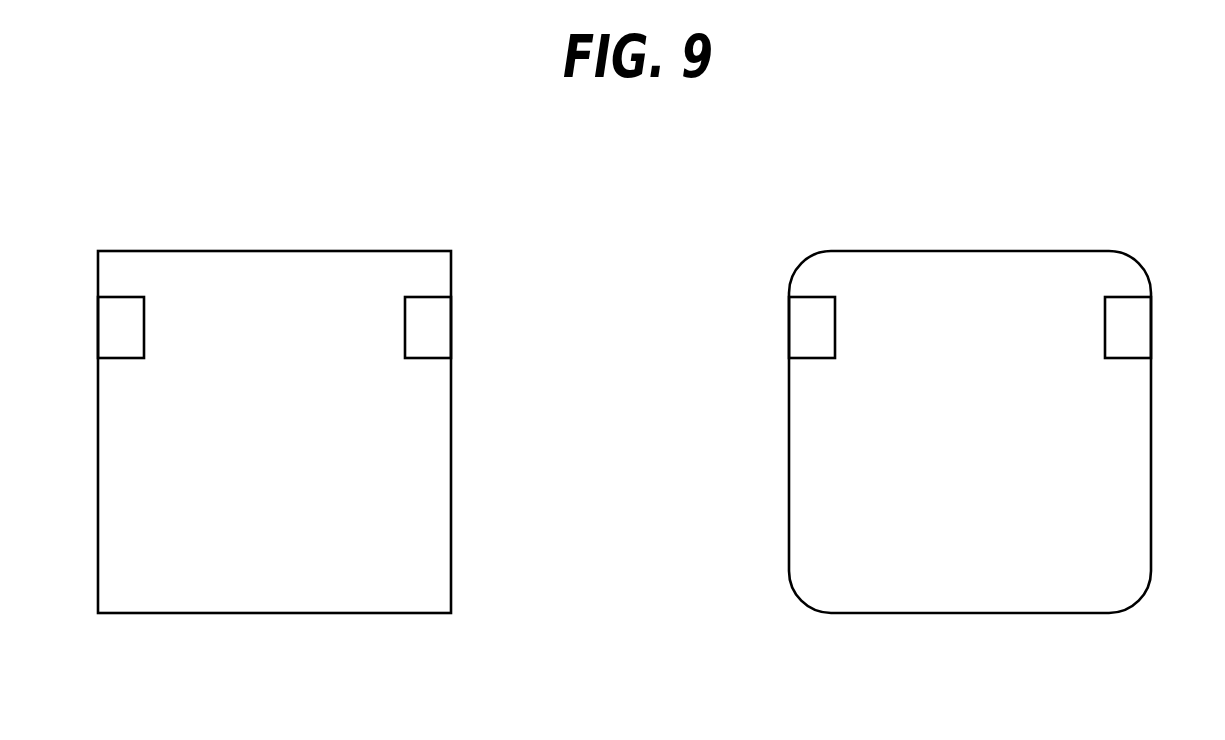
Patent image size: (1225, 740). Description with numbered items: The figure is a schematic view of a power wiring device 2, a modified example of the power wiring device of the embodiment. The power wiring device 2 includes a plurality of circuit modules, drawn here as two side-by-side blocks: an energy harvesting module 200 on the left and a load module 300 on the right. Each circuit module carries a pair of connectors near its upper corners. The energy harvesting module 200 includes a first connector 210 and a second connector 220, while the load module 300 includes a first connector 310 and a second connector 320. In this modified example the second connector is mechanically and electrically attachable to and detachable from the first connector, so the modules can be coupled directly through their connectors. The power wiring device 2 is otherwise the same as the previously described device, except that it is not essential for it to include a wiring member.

The power wiring device 2 is at (1097, 140).
The energy harvesting module 200 is at (277, 613).
The first connector 210 is at (122, 359).
The second connector 220 is at (433, 359).
The load module 300 is at (967, 613).
The first connector 310 is at (813, 359).
The second connector 320 is at (1125, 359).